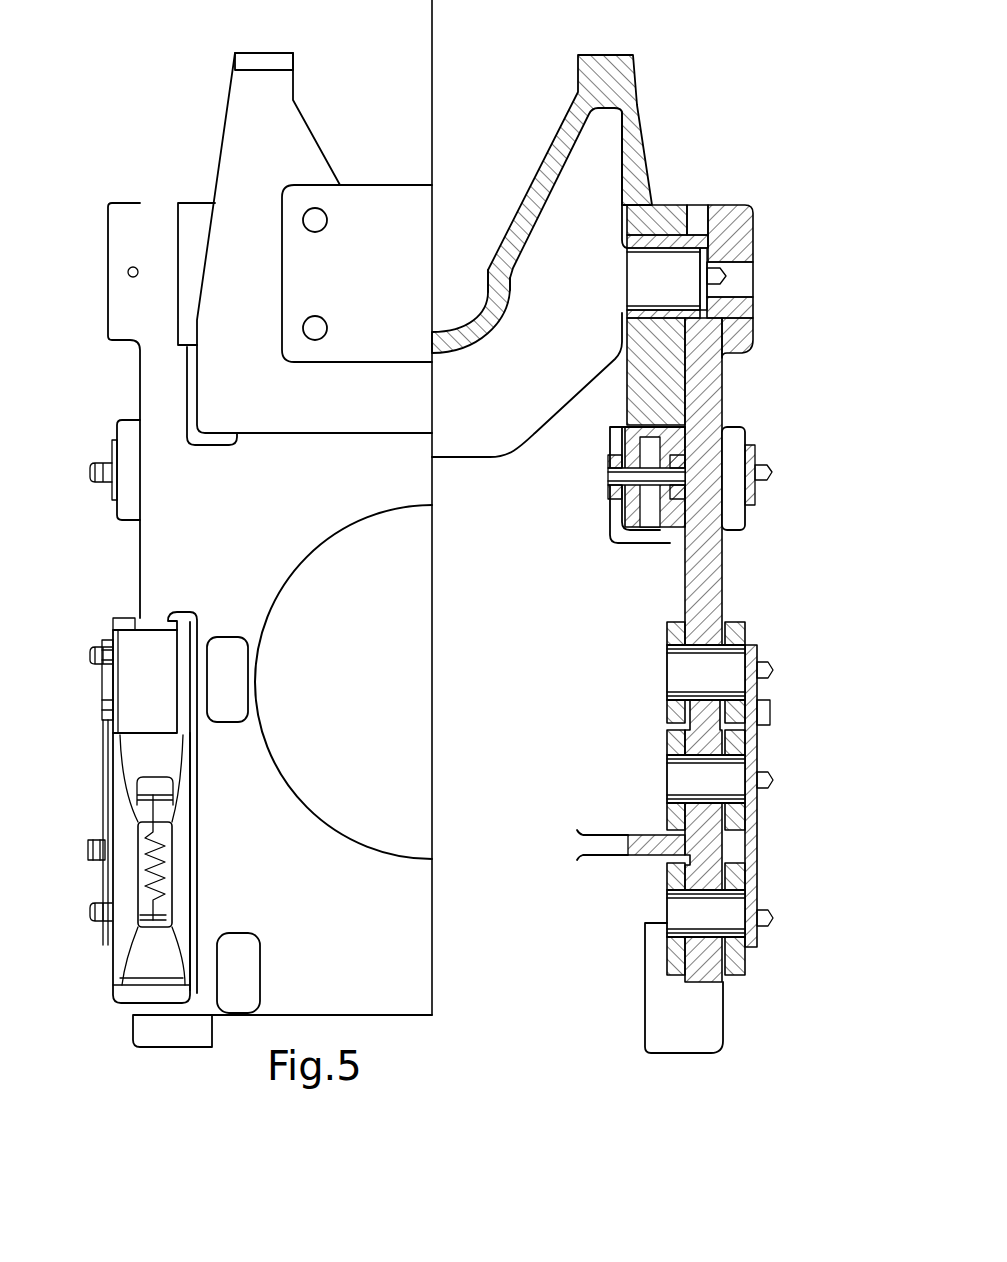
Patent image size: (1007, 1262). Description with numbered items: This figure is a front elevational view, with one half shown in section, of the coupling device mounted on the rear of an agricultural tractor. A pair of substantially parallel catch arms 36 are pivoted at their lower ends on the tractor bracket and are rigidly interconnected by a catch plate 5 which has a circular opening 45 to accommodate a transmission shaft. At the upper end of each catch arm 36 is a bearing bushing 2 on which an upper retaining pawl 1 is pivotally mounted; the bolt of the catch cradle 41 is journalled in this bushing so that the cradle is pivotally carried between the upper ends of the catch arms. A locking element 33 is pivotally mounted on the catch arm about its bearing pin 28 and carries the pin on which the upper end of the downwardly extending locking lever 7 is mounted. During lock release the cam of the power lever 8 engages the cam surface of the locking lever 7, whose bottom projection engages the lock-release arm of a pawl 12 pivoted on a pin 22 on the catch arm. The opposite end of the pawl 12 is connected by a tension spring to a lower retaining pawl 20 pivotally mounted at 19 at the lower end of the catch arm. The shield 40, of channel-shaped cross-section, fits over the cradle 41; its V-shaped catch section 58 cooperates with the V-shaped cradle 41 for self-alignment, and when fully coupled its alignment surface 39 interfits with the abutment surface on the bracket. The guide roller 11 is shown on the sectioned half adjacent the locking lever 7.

The upper retaining pawl 1 is at (658, 216).
The bearing bushing 2 is at (743, 248).
The catch plate 5 is at (273, 548).
The locking lever 7 is at (675, 565).
The power lever 8 is at (127, 632).
The upper guide roller 11 is at (733, 677).
The pawl 12 is at (130, 793).
The pivot of lower retaining pawl 19 is at (720, 925).
The lower retaining pawl 20 is at (157, 962).
The pin 22 is at (728, 787).
The bearing pin 28 is at (750, 453).
The locking element 33 is at (670, 434).
The catch arm 36 is at (703, 366).
The alignment surface 39 is at (261, 53).
The shield 40 is at (259, 158).
The catch cradle 41 is at (597, 150).
The circular opening 45 is at (377, 755).
The catch section 58 is at (517, 207).